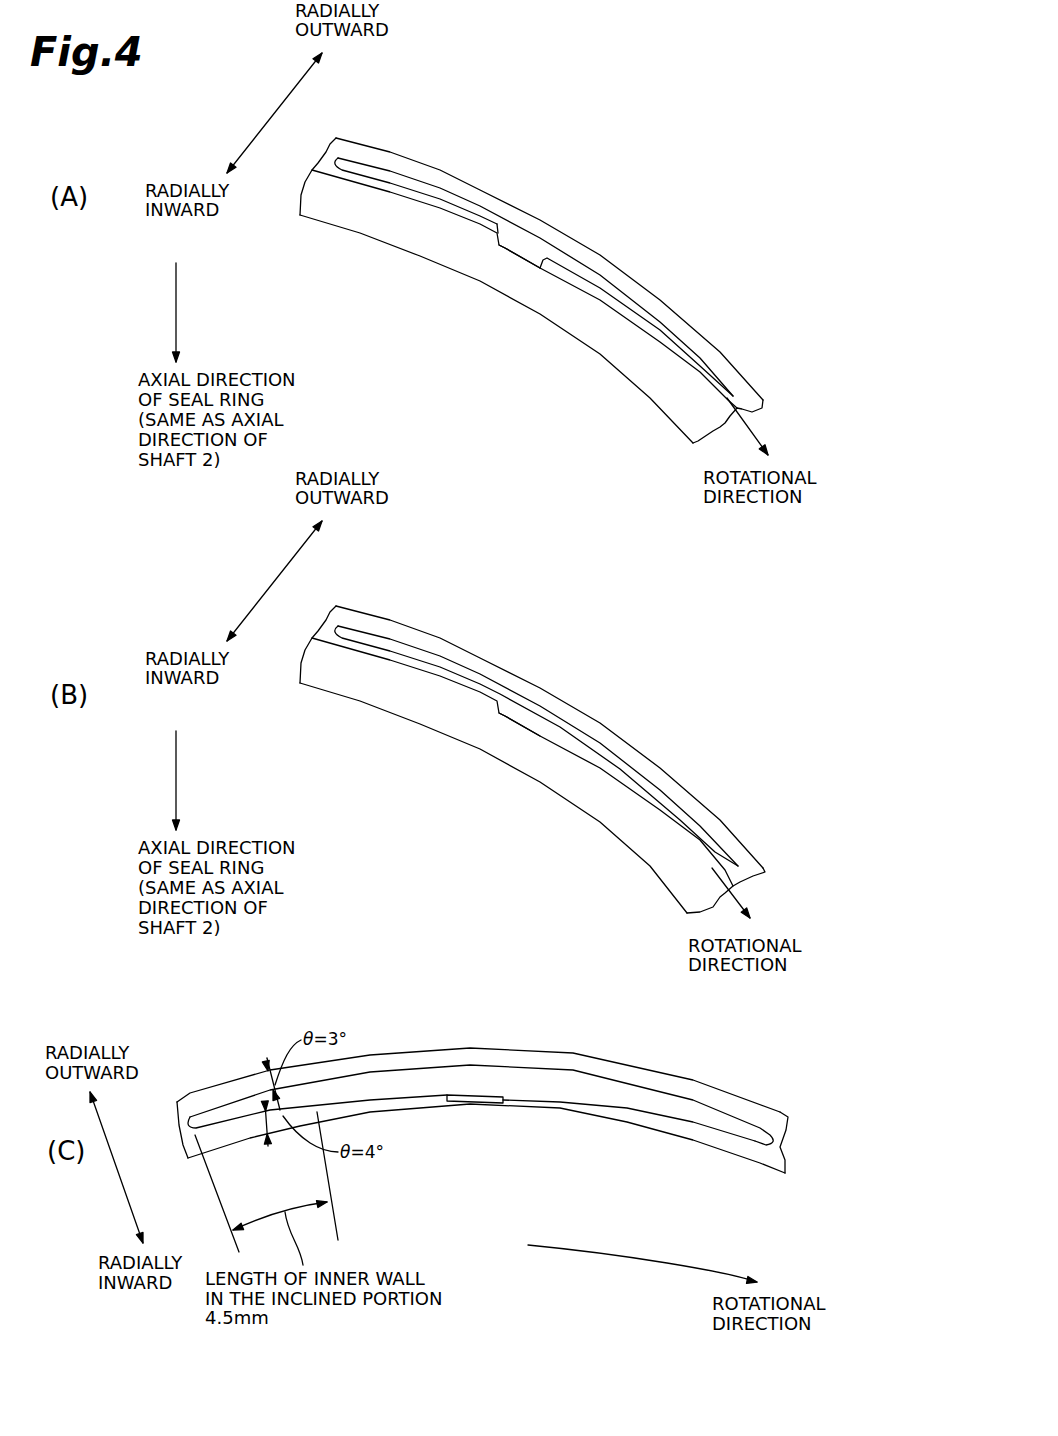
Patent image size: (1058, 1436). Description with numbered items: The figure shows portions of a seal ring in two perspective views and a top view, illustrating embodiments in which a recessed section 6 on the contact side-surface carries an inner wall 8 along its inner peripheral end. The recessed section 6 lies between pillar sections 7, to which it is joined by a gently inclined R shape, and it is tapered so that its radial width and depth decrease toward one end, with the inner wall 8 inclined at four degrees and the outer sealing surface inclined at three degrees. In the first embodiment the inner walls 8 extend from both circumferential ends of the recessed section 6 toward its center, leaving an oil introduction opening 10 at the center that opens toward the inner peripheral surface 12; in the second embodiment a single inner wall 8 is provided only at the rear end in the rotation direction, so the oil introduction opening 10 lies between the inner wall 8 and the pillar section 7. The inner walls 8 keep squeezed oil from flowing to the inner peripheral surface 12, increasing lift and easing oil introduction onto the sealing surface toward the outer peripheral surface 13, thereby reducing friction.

In FIG. 4A, the recessed section 6 is at (496, 218).
In FIG. 4B, the recessed section 6 is at (496, 686).
In FIG. 4C, the recessed section 6 is at (374, 1068).
In FIG. 4A, the pillar section 7 is at (335, 150).
In FIG. 4B, the pillar section 7 is at (335, 618).
In FIG. 4C, the pillar section 7 is at (187, 1130).
In FIG. 4A, the inner wall 8 is at (443, 210).
In FIG. 4B, the inner wall 8 is at (443, 678).
In FIG. 4C, the inner wall 8 is at (445, 1103).
In FIG. 4A, the oil introduction opening 10 is at (517, 255).
In FIG. 4B, the oil introduction opening 10 is at (517, 723).
In FIG. 4C, the oil introduction opening 10 is at (480, 1104).
In FIG. 4A, the inner peripheral surface 12 is at (367, 217).
In FIG. 4B, the inner peripheral surface 12 is at (367, 685).
In FIG. 4C, the inner peripheral surface 12 is at (628, 1128).
In FIG. 4A, the outer peripheral surface 13 is at (390, 148).
In FIG. 4B, the outer peripheral surface 13 is at (390, 616).
In FIG. 4C, the outer peripheral surface 13 is at (576, 1049).